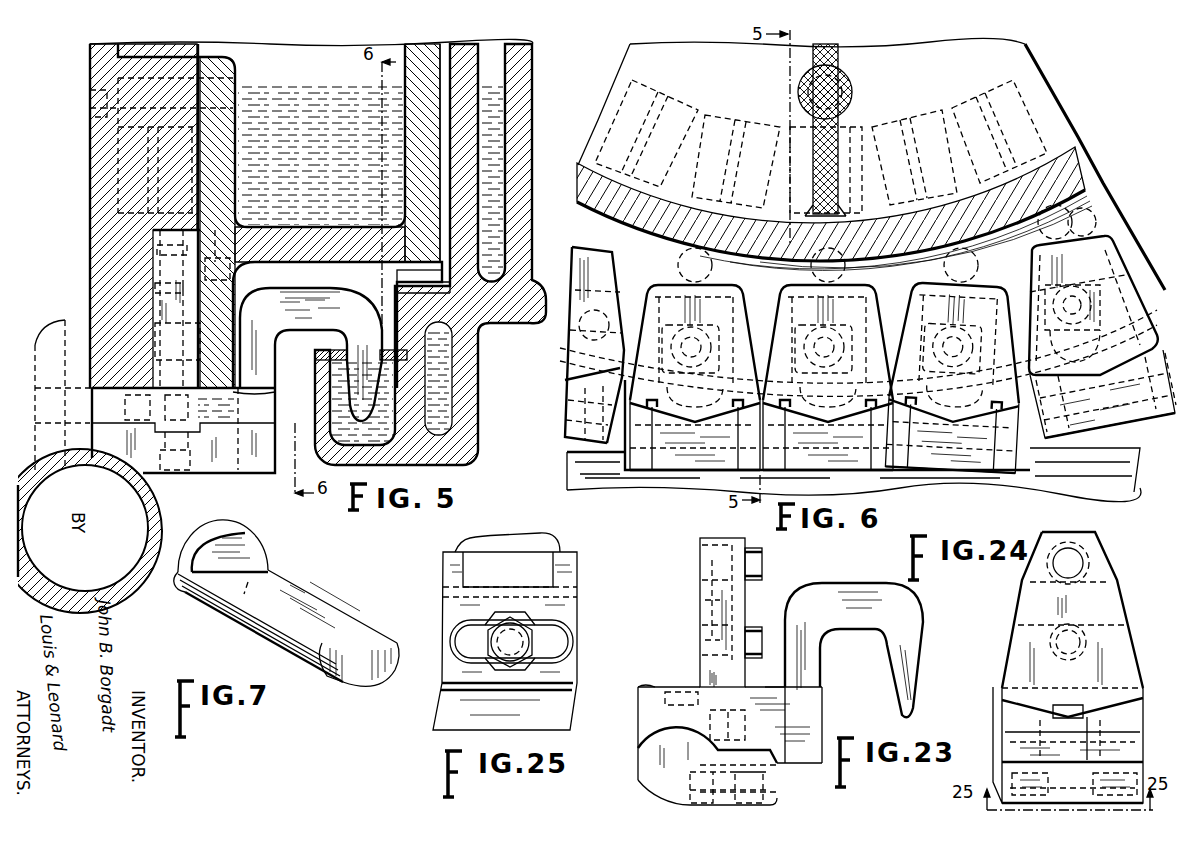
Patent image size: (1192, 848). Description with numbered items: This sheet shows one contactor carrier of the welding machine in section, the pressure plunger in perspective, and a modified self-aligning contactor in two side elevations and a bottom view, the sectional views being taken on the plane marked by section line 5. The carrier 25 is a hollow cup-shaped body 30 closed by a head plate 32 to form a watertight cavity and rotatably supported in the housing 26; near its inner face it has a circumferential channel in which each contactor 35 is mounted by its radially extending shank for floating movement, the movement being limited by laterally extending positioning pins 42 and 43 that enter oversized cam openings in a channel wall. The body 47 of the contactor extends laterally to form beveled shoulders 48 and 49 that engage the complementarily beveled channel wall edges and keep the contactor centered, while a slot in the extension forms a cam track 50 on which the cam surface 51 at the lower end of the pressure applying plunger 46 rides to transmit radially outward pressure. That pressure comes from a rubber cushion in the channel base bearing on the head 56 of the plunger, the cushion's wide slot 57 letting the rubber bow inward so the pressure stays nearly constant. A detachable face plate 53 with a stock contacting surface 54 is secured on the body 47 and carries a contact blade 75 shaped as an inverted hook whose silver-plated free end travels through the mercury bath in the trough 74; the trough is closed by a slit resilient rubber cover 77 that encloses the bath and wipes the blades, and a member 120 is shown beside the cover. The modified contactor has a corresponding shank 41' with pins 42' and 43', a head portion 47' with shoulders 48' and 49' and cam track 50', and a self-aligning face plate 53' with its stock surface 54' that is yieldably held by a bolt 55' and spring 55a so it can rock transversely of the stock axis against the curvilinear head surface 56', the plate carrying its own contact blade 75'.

In FIG. 5, the section line 5 is at (142, 586).
In FIG. 6, the section line 5 is at (1133, 440).
In FIG. 6, the carrier 25 is at (1088, 230).
In FIG. 5, the housing 26 is at (533, 104).
In FIG. 6, the housing 26 is at (1053, 128).
In FIG. 5, the body 30 is at (337, 307).
In FIG. 6, the body 30 is at (1070, 150).
In FIG. 5, the head plate 32 is at (90, 50).
In FIG. 5, the contactor 35 is at (92, 423).
In FIG. 6, the contactor 35 is at (1168, 380).
In FIG. 6, the positioning pin 42 is at (1113, 205).
In FIG. 6, the positioning pin 43 is at (1110, 290).
In FIG. 5, the pressure applying plunger 46 is at (118, 296).
In FIG. 7, the pressure applying plunger 46 is at (333, 610).
In FIG. 5, the body 47 is at (198, 408).
In FIG. 5, the shoulder 48 is at (63, 395).
In FIG. 5, the shoulder 49 is at (259, 396).
In FIG. 6, the cam track 50 is at (876, 360).
In FIG. 6, the cam surface 51 is at (1130, 318).
In FIG. 7, the cam surface 51 is at (360, 684).
In FIG. 5, the face plate 53 is at (209, 444).
In FIG. 6, the face plate 53 is at (596, 481).
In FIG. 5, the stock contacting surface 54 is at (167, 447).
In FIG. 6, the stock contacting surface 54 is at (854, 451).
In FIG. 7, the head 56 is at (241, 546).
In FIG. 5, the slot 57 is at (150, 190).
In FIG. 5, the trough 74 is at (342, 404).
In FIG. 5, the contact blade 75 is at (311, 354).
In FIG. 6, the contact blade 75 is at (579, 345).
In FIG. 5, the rubber cover 77 is at (316, 352).
In FIG. 5, the spacer 120 is at (398, 276).
In FIG. 23, the clamp block 41' is at (704, 612).
In FIG. 24, the clamp block 41' is at (1057, 610).
In FIG. 23, the bolt 42' is at (771, 566).
In FIG. 24, the bolt 42' is at (1099, 563).
In FIG. 23, the bolt 43' is at (764, 630).
In FIG. 24, the bolt 43' is at (1107, 637).
In FIG. 25, the head portion 47' is at (528, 641).
In FIG. 23, the head portion 47' is at (712, 726).
In FIG. 24, the head portion 47' is at (1048, 745).
In FIG. 23, the blade 48' is at (639, 673).
In FIG. 23, the clamp face 49' is at (771, 671).
In FIG. 23, the recess 50' is at (680, 678).
In FIG. 23, the self-aligning face plate 53' is at (686, 789).
In FIG. 25, the bolt 54' is at (559, 642).
In FIG. 23, the bolt 54' is at (693, 794).
In FIG. 25, the bolt 55' is at (540, 636).
In FIG. 23, the bolt 55' is at (762, 775).
In FIG. 24, the bolt 55' is at (1051, 764).
In FIG. 23, the spring 55a is at (780, 795).
In FIG. 23, the cylindrical surface 56' is at (686, 747).
In FIG. 24, the cylindrical surface 56' is at (1045, 731).
In FIG. 23, the hook member 75' is at (854, 650).
In FIG. 24, the hook member 75' is at (1094, 706).